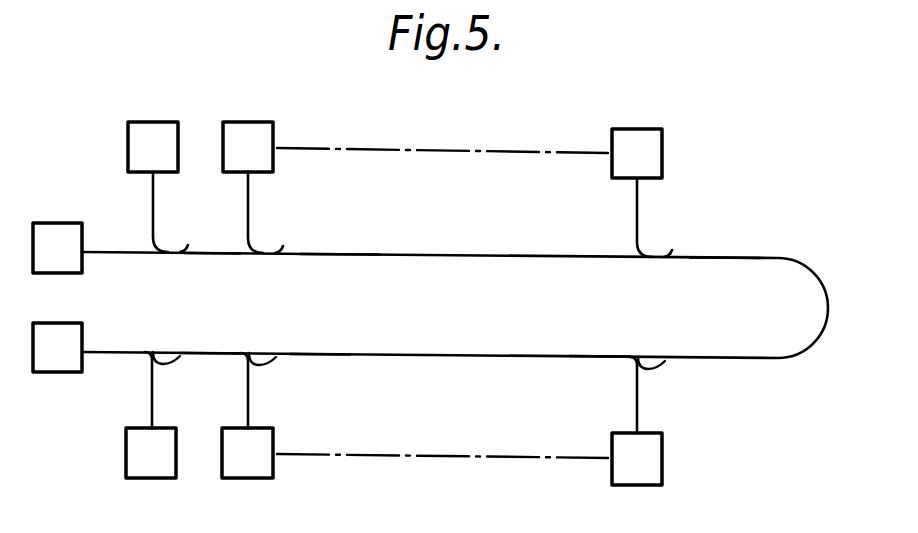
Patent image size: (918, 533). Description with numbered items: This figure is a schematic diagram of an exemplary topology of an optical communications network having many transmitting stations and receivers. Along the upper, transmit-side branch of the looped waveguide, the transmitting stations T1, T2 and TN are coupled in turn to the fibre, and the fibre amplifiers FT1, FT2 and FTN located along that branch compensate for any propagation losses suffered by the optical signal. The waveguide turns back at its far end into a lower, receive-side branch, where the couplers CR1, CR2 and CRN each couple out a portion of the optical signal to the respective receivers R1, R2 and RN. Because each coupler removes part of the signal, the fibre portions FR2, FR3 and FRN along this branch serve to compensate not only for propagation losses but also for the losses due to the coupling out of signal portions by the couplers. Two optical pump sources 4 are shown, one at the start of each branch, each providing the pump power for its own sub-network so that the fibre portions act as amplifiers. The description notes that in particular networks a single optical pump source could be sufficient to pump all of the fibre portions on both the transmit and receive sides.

The optical pump source 4 is at (52, 233).
The transmitting station T1 is at (147, 135).
The transmitting station T2 is at (246, 137).
The transmitting station TN is at (632, 143).
The fibre amplifier FT1 is at (212, 254).
The fibre amplifier FT2 is at (343, 255).
The fibre amplifier FTN is at (730, 259).
The fibre portion FR2 is at (212, 350).
The fibre portion FR3 is at (312, 352).
The fibre portion FRN is at (605, 360).
The coupler CR1 is at (163, 366).
The coupler CR2 is at (259, 367).
The coupler CRN is at (650, 371).
The receiver R1 is at (148, 478).
The receiver R2 is at (242, 478).
The receiver RN is at (638, 473).